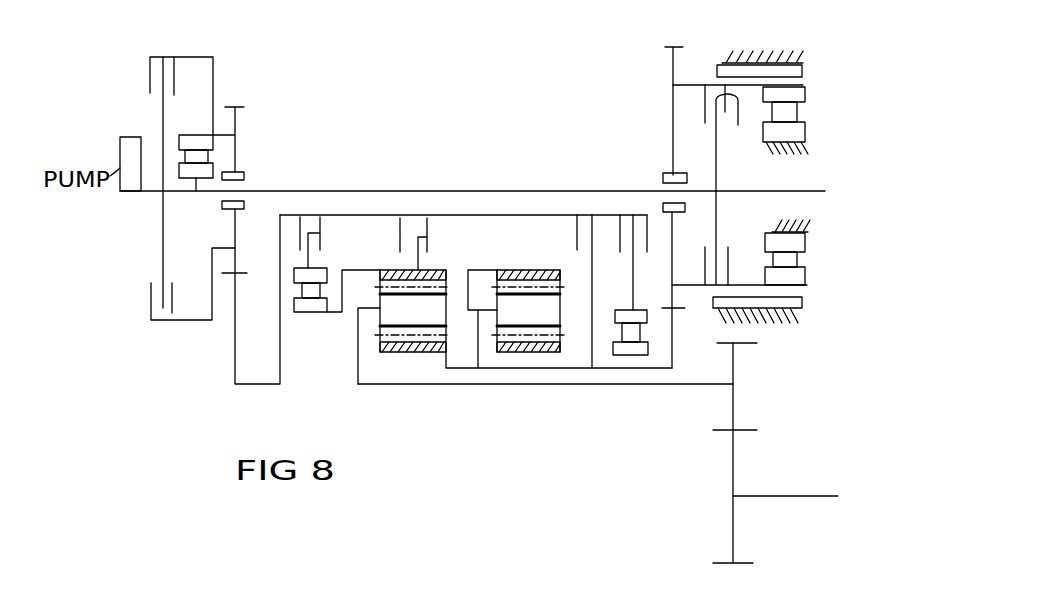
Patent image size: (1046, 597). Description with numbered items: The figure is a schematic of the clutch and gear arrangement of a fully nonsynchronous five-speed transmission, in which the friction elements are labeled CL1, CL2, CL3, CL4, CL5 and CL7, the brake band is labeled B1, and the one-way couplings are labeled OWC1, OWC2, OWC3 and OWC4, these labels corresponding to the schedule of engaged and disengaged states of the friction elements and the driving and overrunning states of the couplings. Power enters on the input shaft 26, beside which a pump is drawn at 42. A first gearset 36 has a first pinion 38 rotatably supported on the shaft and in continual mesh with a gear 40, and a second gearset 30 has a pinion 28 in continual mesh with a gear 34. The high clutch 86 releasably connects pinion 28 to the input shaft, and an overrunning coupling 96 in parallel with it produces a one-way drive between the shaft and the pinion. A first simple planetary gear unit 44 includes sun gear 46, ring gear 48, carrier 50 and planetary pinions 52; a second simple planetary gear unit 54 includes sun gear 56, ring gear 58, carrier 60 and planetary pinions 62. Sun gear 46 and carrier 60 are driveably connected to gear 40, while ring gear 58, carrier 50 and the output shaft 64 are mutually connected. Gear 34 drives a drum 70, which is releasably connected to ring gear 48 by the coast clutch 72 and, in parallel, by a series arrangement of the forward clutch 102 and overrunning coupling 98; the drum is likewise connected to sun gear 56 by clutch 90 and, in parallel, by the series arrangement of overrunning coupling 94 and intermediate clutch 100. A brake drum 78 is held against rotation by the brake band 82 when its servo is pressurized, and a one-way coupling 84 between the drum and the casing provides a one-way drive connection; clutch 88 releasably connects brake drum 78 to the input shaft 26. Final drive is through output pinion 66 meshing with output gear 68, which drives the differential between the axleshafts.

The input shaft 26 is at (825, 191).
The pinion 28 is at (235, 152).
The second gearset 30 is at (283, 112).
The gear 34 is at (235, 358).
The first gearset 36 is at (648, 78).
The first pinion 38 is at (673, 132).
The gear 40 is at (672, 342).
The pump 42 is at (120, 137).
The first simple planetary gear unit 44 is at (358, 254).
The sun gear 46 is at (382, 352).
The ring gear 48 is at (433, 268).
The carrier 50 is at (358, 342).
The planetary pinions 52 is at (442, 271).
The second simple planetary gear unit 54 is at (524, 250).
The sun gear 56 is at (533, 352).
The ring gear 58 is at (512, 270).
The carrier 60 is at (476, 333).
The planetary pinions 62 is at (551, 326).
The output shaft 64 is at (600, 384).
The output pinion 66 is at (735, 413).
The output gear 68 is at (735, 478).
The drum 70 is at (470, 215).
The coast clutch 72 is at (427, 237).
The brake drum 78 is at (688, 85).
The brake band 82 is at (800, 70).
The coupling 84 is at (790, 113).
The high clutch 86 is at (150, 78).
The clutch 88 is at (727, 138).
The clutch 90 is at (593, 243).
The overrunning coupling 94 is at (641, 330).
The overrunning coupling 96 is at (211, 234).
The overrunning coupling 98 is at (302, 290).
The intermediate clutch 100 is at (633, 243).
The forward clutch 102 is at (323, 233).
The clutch CL1 is at (377, 234).
The clutch CL2 is at (643, 104).
The clutch CL3 is at (160, 42).
The clutch CL4 is at (549, 235).
The clutch CL5 is at (621, 207).
The clutch CL7 is at (309, 205).
The brake B1 is at (757, 39).
The one-way clutch OWC1 is at (793, 172).
The one-way clutch OWC2 is at (642, 405).
The one-way clutch OWC3 is at (153, 148).
The one-way clutch OWC4 is at (313, 332).